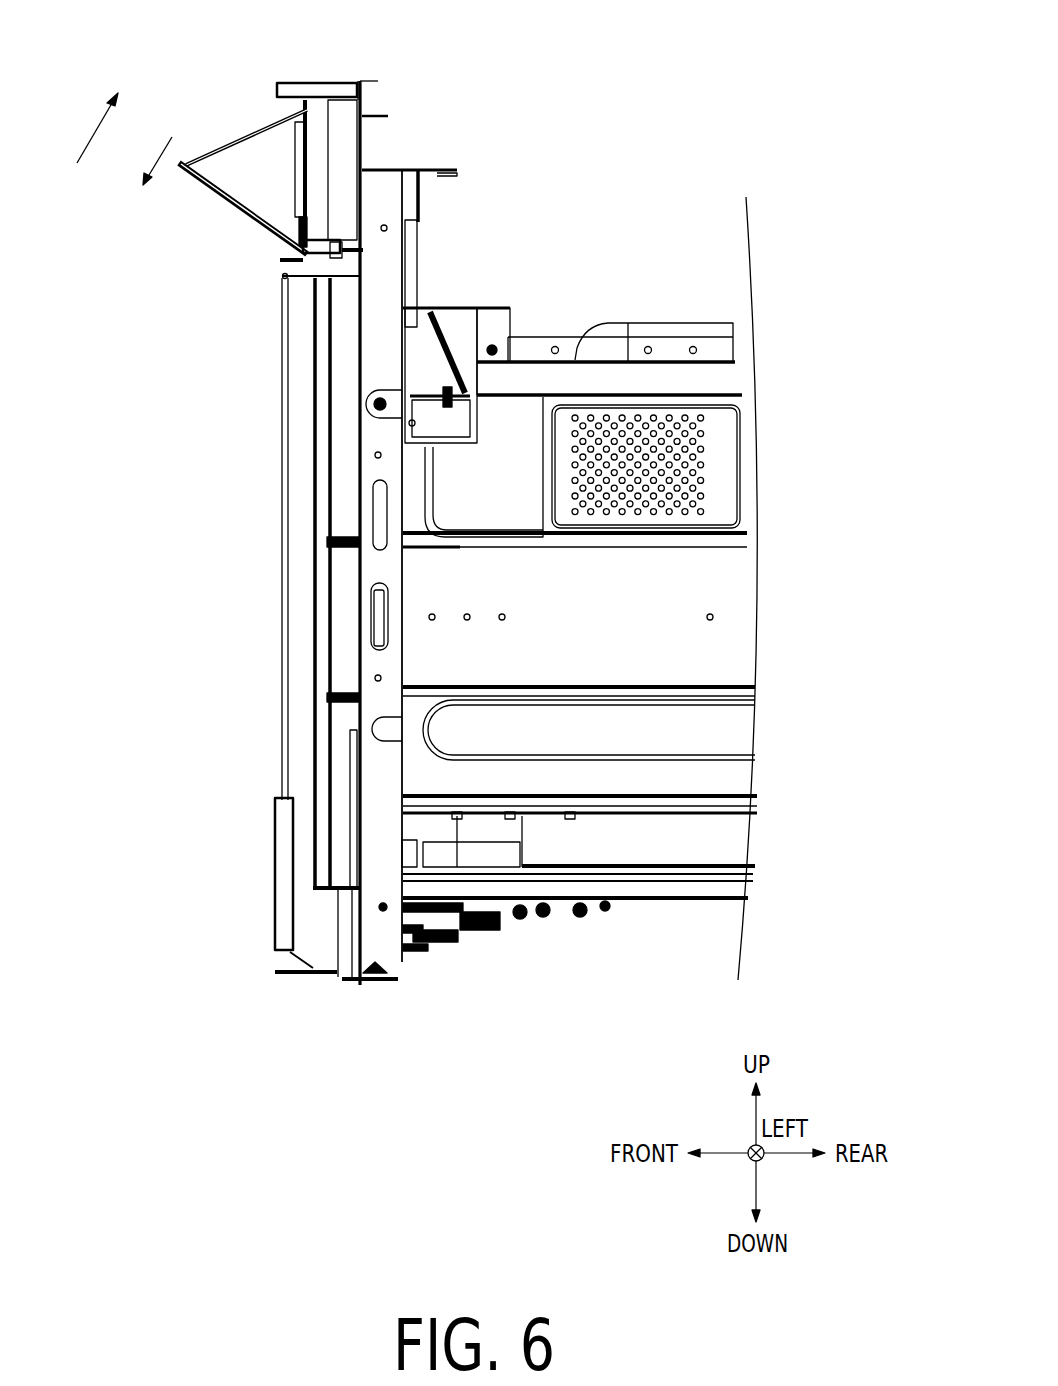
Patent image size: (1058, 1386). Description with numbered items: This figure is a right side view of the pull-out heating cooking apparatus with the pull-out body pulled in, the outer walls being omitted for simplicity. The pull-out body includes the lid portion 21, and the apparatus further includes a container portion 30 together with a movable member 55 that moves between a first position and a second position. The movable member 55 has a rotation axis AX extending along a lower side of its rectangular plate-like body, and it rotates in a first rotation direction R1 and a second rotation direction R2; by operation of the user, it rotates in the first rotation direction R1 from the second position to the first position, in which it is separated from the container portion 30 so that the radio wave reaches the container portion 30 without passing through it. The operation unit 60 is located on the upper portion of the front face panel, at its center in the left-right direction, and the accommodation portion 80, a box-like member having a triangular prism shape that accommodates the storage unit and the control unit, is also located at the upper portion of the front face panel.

The lid portion 21 is at (283, 705).
The container portion 30 is at (303, 160).
The movable member 55 is at (243, 227).
The operation unit 60 is at (243, 140).
The accommodation portion 80 is at (273, 173).
The rotation axis AX is at (342, 253).
The first rotation direction R1 is at (156, 148).
The second rotation direction R2 is at (94, 134).